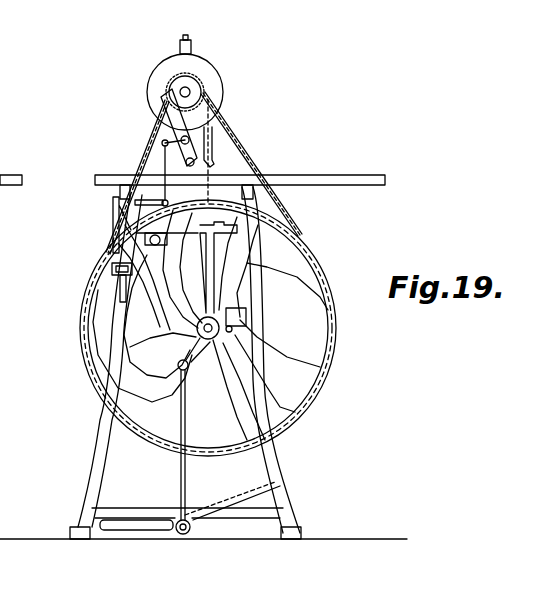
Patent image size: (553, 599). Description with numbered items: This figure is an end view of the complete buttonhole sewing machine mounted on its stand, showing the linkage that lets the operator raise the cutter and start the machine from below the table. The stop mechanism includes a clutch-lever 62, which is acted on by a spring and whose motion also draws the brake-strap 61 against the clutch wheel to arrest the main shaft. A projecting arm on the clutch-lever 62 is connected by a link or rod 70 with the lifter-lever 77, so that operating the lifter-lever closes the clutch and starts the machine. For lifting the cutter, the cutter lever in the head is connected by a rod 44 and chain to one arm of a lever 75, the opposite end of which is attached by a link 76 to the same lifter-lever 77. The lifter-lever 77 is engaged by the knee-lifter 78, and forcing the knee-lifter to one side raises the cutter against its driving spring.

The brake-strap 61 is at (219, 73).
The clutch-lever 62 is at (178, 113).
The link or rod 70 is at (163, 152).
The rod 44 is at (222, 148).
The lifter-lever 77 is at (136, 202).
The link 76 is at (118, 219).
The lever 75 is at (163, 244).
The knee-lifter 78 is at (120, 296).